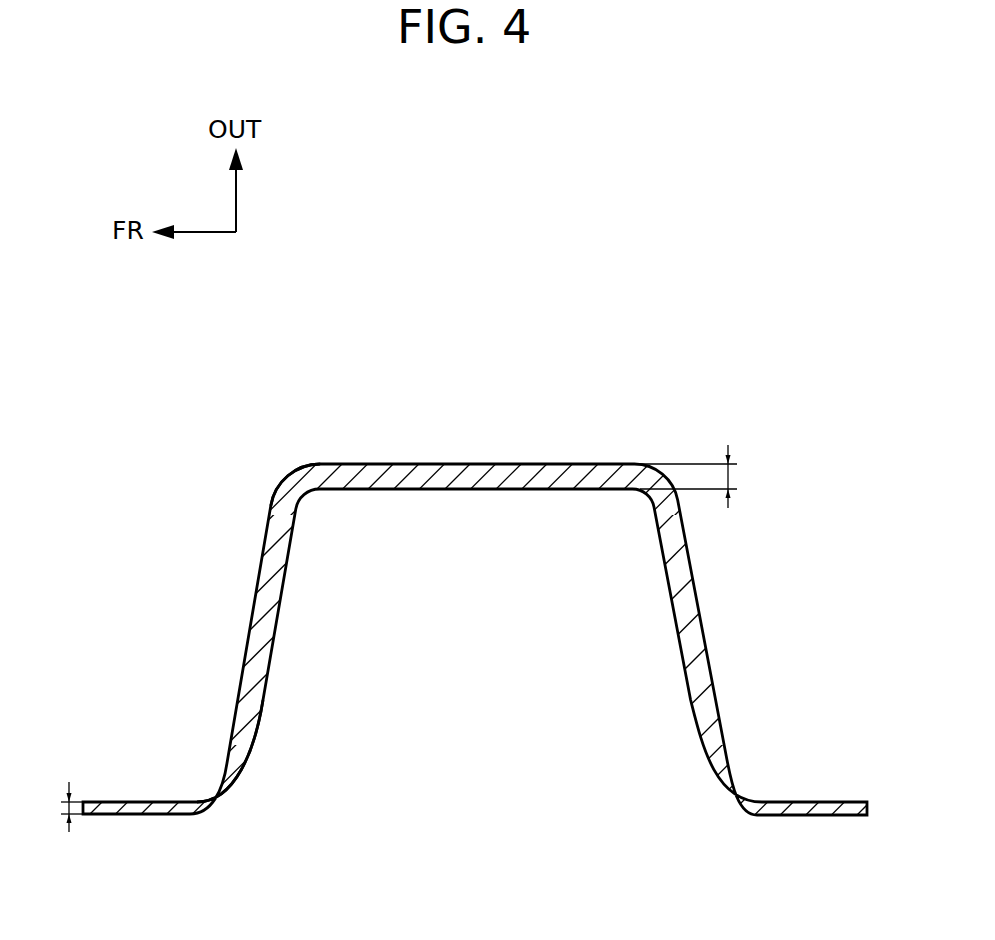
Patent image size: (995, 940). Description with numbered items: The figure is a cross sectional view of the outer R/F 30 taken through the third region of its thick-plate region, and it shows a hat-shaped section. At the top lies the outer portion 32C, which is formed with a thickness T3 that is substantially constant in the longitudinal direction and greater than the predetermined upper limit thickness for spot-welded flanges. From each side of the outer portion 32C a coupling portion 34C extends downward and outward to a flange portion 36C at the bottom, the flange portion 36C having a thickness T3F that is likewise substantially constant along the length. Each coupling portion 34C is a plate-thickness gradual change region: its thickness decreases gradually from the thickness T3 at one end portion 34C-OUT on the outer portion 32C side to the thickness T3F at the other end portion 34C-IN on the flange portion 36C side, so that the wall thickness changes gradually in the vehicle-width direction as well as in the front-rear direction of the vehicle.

The outer R/F 30 is at (754, 364).
The outer portion 32C is at (538, 463).
The coupling portion 34C is at (253, 620).
The one end portion 34C-OUT is at (300, 469).
The other end portion 34C-IN is at (212, 792).
The flange portion 36C is at (138, 817).
The thickness of the outer portion T3 is at (732, 479).
The thickness of the flange portion T3F is at (69, 810).